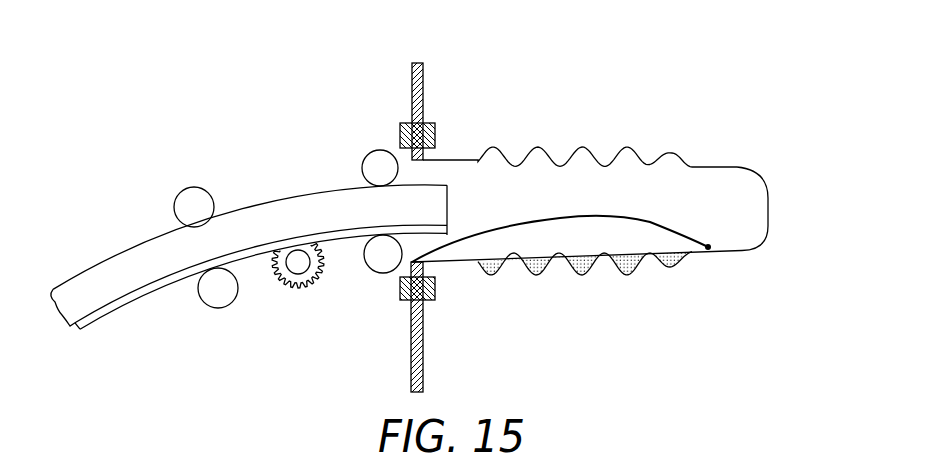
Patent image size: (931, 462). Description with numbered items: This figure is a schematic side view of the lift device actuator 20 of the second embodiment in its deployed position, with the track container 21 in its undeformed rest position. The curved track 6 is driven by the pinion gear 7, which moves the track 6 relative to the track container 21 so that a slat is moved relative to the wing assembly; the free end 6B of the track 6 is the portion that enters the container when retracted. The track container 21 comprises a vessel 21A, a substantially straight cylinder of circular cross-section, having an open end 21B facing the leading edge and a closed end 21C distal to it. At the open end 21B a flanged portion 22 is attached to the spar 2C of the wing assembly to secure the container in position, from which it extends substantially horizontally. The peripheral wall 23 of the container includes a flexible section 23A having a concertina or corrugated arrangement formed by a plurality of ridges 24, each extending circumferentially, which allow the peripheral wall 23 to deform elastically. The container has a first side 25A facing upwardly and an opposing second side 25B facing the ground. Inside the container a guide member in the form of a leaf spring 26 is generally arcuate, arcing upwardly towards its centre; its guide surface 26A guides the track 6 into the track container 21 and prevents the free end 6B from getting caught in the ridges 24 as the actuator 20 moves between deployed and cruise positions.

The lift device actuator 20 is at (214, 104).
The curved track 6 is at (278, 241).
The free end of the track 6B is at (446, 203).
The pinion gear 7 is at (305, 290).
The spar 2C is at (415, 111).
The flanged portion 22 is at (427, 117).
The open end 21B is at (415, 172).
The track container 21 is at (623, 240).
The vessel 21A is at (732, 251).
The closed end 21C is at (768, 190).
The peripheral wall 23 is at (733, 167).
The flexible section 23A is at (628, 147).
The ridges 24 is at (583, 147).
The first side 25A is at (645, 150).
The second side 25B is at (583, 277).
The leaf spring 26 is at (559, 242).
The guide surface 26A is at (609, 222).